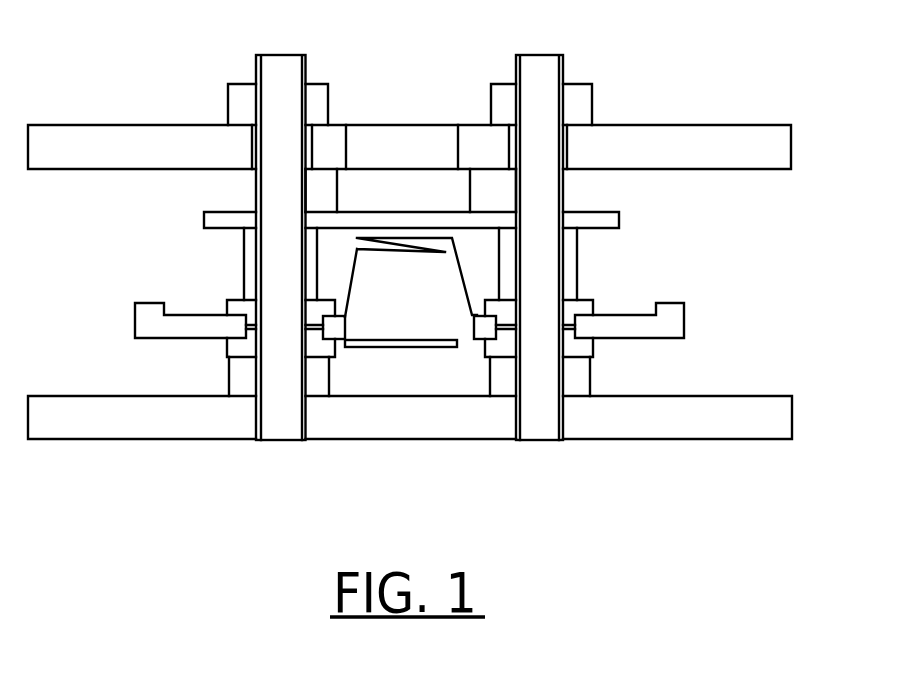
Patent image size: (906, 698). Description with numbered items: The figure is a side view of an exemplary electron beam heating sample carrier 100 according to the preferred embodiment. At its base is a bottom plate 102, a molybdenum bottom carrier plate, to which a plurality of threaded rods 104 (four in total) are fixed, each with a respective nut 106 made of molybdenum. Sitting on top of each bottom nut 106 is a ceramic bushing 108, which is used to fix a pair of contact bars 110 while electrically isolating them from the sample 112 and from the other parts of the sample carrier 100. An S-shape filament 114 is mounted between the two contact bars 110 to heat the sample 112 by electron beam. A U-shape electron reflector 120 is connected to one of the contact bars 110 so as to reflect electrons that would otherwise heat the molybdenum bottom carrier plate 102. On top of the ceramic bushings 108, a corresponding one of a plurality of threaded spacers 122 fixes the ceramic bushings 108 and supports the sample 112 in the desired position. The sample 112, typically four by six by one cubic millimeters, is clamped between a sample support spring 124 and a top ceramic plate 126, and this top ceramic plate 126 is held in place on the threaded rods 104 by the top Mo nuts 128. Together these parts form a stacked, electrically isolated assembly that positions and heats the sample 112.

The electron beam heating sample carrier 100 is at (430, 28).
The bottom plate 102 is at (638, 432).
The threaded rods 104 is at (280, 53).
The nut 106 is at (243, 370).
The ceramic bushing 108 is at (225, 350).
The contact bars 110 is at (158, 320).
The sample 112 is at (373, 193).
The S-shape filament 114 is at (398, 254).
The U-shape electron reflector 120 is at (388, 348).
The threaded spacers 122 is at (242, 270).
The sample support spring 124 is at (610, 223).
The top ceramic plate 126 is at (628, 140).
The top Mo nuts 128 is at (233, 92).